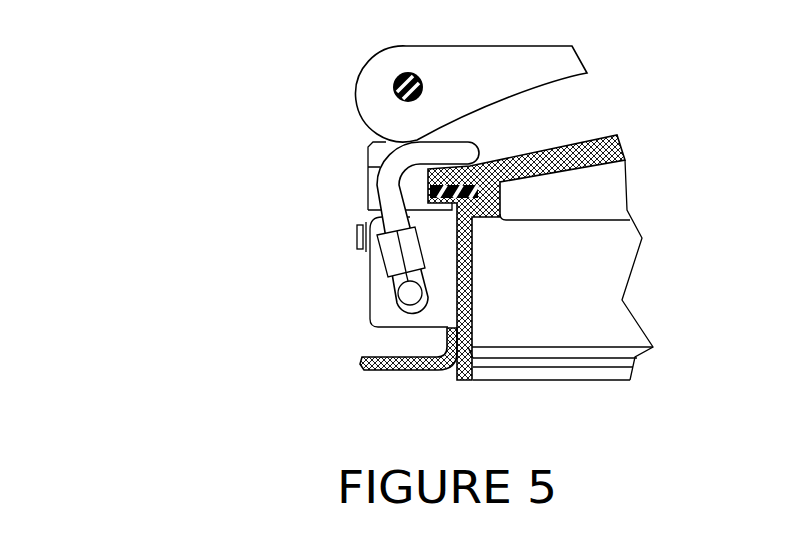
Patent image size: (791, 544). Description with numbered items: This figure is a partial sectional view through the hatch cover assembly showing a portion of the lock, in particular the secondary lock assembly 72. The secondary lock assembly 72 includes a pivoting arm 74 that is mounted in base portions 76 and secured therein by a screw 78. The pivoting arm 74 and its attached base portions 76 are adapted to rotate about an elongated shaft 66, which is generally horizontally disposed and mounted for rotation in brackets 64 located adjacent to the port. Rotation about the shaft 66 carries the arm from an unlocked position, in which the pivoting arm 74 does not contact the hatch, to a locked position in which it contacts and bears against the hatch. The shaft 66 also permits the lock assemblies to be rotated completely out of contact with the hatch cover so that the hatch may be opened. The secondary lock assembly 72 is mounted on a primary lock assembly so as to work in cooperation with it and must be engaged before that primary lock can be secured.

The cam support brackets 64 is at (392, 323).
The shaft 66 is at (404, 297).
The secondary lock assembly 72 is at (152, 258).
The pivoting arm 74 is at (380, 182).
The base portions 76 is at (388, 254).
The screw 78 is at (357, 231).